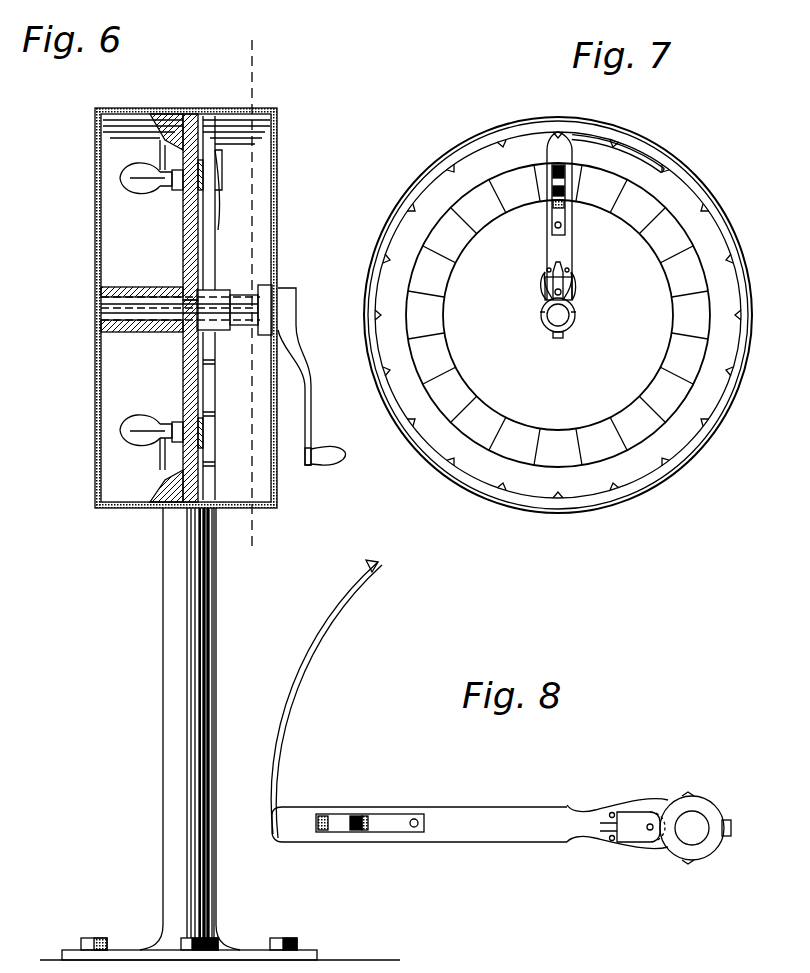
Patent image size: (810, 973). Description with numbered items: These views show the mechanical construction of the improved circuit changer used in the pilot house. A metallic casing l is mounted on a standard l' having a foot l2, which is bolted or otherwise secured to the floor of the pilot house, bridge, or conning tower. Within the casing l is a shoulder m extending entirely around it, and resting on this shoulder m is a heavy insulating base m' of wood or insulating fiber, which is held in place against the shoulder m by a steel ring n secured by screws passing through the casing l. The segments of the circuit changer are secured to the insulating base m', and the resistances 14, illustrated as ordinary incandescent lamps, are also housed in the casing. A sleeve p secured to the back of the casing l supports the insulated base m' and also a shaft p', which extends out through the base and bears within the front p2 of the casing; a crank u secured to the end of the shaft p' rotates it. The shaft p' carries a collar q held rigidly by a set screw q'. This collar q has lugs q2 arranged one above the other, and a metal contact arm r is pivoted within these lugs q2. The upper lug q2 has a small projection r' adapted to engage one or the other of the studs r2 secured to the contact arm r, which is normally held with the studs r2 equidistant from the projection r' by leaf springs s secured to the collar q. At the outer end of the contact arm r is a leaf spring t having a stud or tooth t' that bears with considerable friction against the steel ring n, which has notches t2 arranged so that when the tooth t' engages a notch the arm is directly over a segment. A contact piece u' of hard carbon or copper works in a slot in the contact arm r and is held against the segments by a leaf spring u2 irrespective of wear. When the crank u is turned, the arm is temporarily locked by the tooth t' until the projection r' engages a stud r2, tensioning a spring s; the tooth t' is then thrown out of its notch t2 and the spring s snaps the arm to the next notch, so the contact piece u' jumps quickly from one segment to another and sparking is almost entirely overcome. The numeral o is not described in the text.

In FIG. 6, the metallic casing l is at (186, 326).
In FIG. 7, the metallic casing l is at (558, 315).
In FIG. 6, the standard l' is at (189, 729).
In FIG. 6, the foot l2 is at (317, 950).
In FIG. 6, the shoulder m is at (170, 312).
In FIG. 6, the insulating base m' is at (160, 401).
In FIG. 6, the steel ring n is at (207, 114).
In FIG. 7, the steel ring n is at (492, 132).
In FIG. 6, the dial ring o is at (215, 440).
In FIG. 7, the dial ring o is at (442, 350).
In FIG. 6, the sleeve p is at (142, 273).
In FIG. 6, the shaft p' is at (171, 313).
In FIG. 7, the shaft p' is at (549, 335).
In FIG. 8, the shaft p' is at (711, 816).
In FIG. 6, the front of the casing p2 is at (278, 232).
In FIG. 7, the collar q is at (558, 315).
In FIG. 8, the collar q is at (699, 832).
In FIG. 7, the set screw q' is at (558, 341).
In FIG. 8, the set screw q' is at (744, 828).
In FIG. 6, the lugs q2 is at (225, 290).
In FIG. 7, the lugs q2 is at (576, 326).
In FIG. 8, the lugs q2 is at (638, 820).
In FIG. 7, the contact arm r is at (551, 216).
In FIG. 8, the contact arm r is at (419, 808).
In FIG. 7, the projection r' is at (580, 269).
In FIG. 8, the projection r' is at (593, 827).
In FIG. 7, the studs r2 is at (546, 272).
In FIG. 8, the studs r2 is at (612, 812).
In FIG. 7, the leaf springs s is at (541, 297).
In FIG. 8, the leaf springs s is at (590, 808).
In FIG. 7, the leaf spring t is at (618, 156).
In FIG. 8, the leaf spring t is at (326, 700).
In FIG. 7, the stud or tooth t' is at (680, 143).
In FIG. 8, the stud or tooth t' is at (375, 550).
In FIG. 7, the notches t2 is at (740, 264).
In FIG. 6, the crank u is at (312, 376).
In FIG. 6, the contact piece u' is at (227, 170).
In FIG. 6, the leaf spring u2 is at (222, 200).
In FIG. 7, the leaf spring u2 is at (552, 222).
In FIG. 8, the leaf spring u2 is at (360, 814).
In FIG. 6, the resistances 14 is at (140, 186).